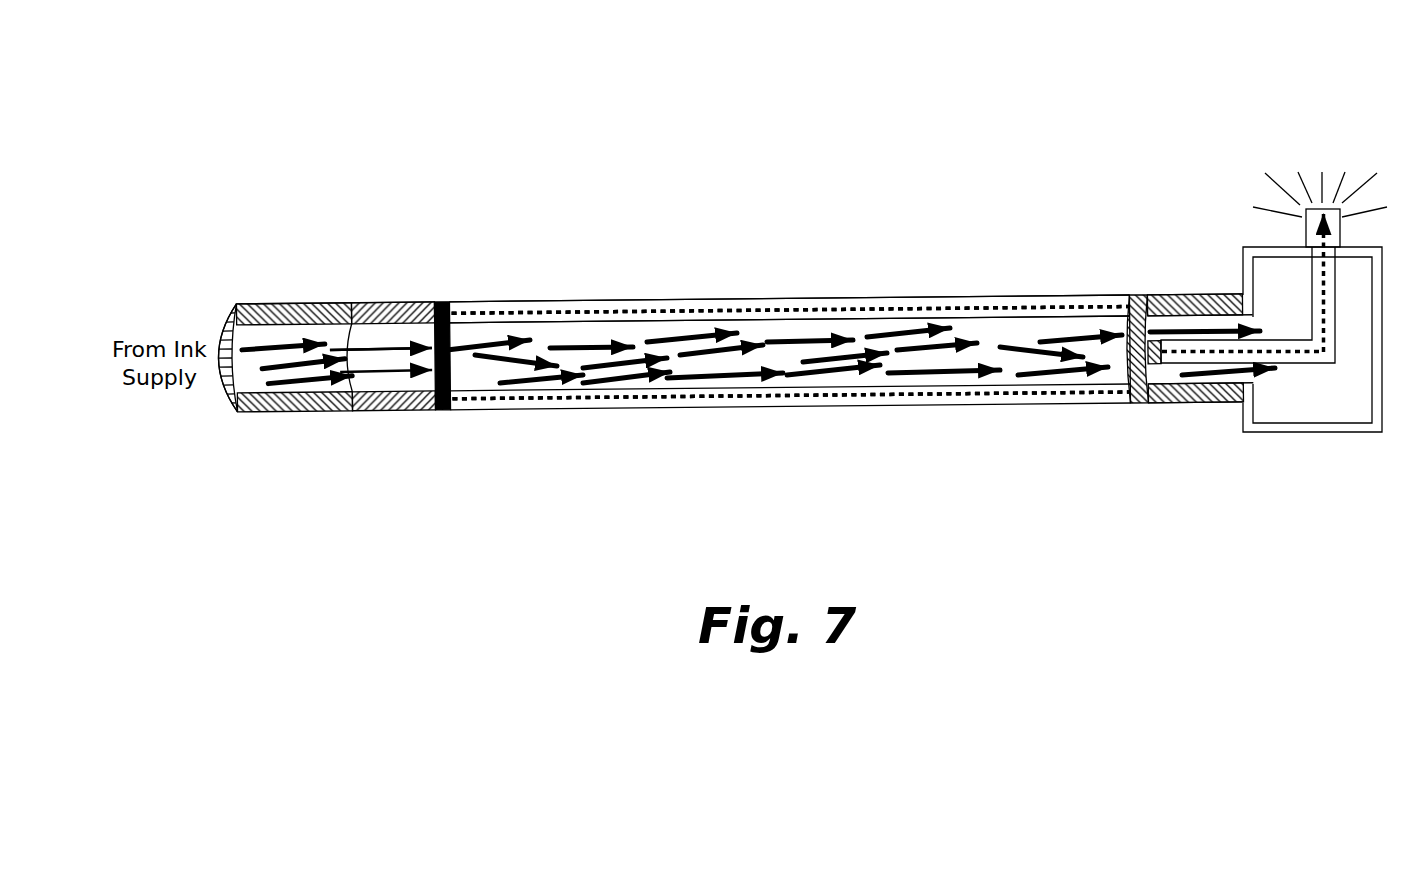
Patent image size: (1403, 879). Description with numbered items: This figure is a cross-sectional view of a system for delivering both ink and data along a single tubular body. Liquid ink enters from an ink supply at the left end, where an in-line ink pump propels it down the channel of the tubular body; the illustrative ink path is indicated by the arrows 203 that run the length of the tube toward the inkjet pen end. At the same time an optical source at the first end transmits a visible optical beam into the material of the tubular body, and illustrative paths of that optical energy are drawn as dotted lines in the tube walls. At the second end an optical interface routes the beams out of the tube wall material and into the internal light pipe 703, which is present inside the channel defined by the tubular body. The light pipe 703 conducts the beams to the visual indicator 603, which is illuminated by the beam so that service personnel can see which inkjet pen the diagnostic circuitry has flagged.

The arrows 203 is at (818, 378).
The visual indicator 603 is at (1313, 231).
The internal light pipe 703 is at (1323, 365).